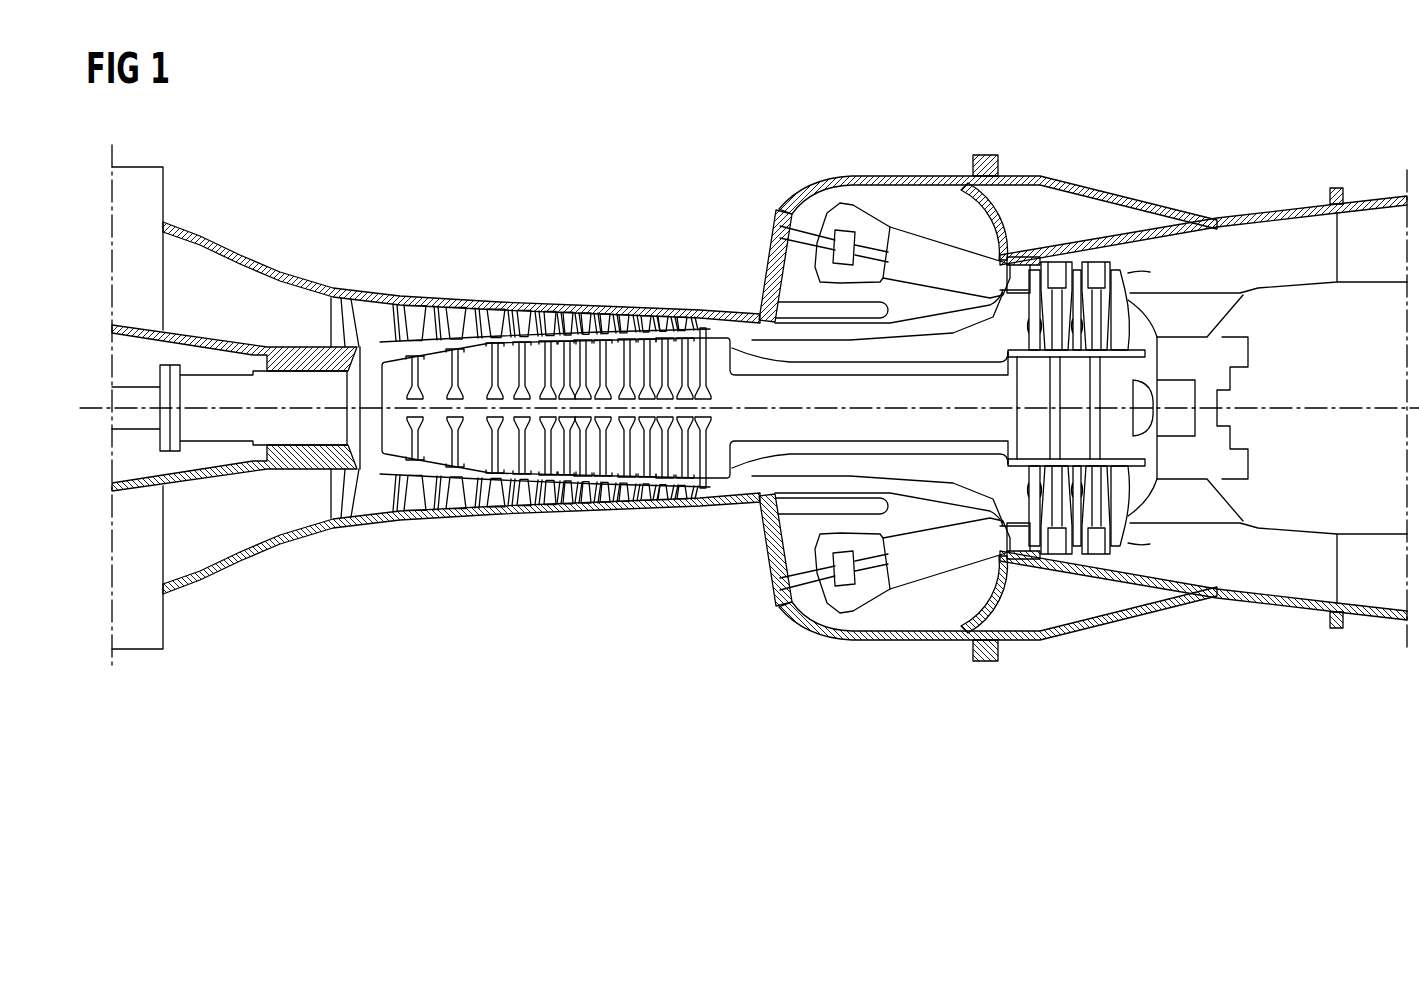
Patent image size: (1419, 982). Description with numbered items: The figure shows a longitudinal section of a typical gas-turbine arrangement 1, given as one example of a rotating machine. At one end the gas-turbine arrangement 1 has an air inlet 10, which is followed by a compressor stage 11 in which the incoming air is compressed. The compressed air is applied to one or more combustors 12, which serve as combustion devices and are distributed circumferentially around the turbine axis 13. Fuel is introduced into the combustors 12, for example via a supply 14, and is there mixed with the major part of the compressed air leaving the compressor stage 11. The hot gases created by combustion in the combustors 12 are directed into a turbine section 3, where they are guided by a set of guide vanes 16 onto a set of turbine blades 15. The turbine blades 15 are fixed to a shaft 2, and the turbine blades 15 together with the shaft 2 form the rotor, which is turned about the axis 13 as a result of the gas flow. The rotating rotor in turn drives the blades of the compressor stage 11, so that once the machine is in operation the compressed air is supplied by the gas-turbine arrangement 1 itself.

The gas-turbine arrangement 1 is at (615, 120).
The shaft 2 is at (745, 363).
The turbine section 3 is at (1067, 684).
The air inlet 10 is at (155, 203).
The compressor stage 11 is at (553, 281).
The combustor 12 is at (935, 248).
The turbine axis 13 is at (1303, 403).
The supply 14 is at (783, 583).
The turbine blades 15 is at (1117, 286).
The guide vanes 16 is at (1058, 272).